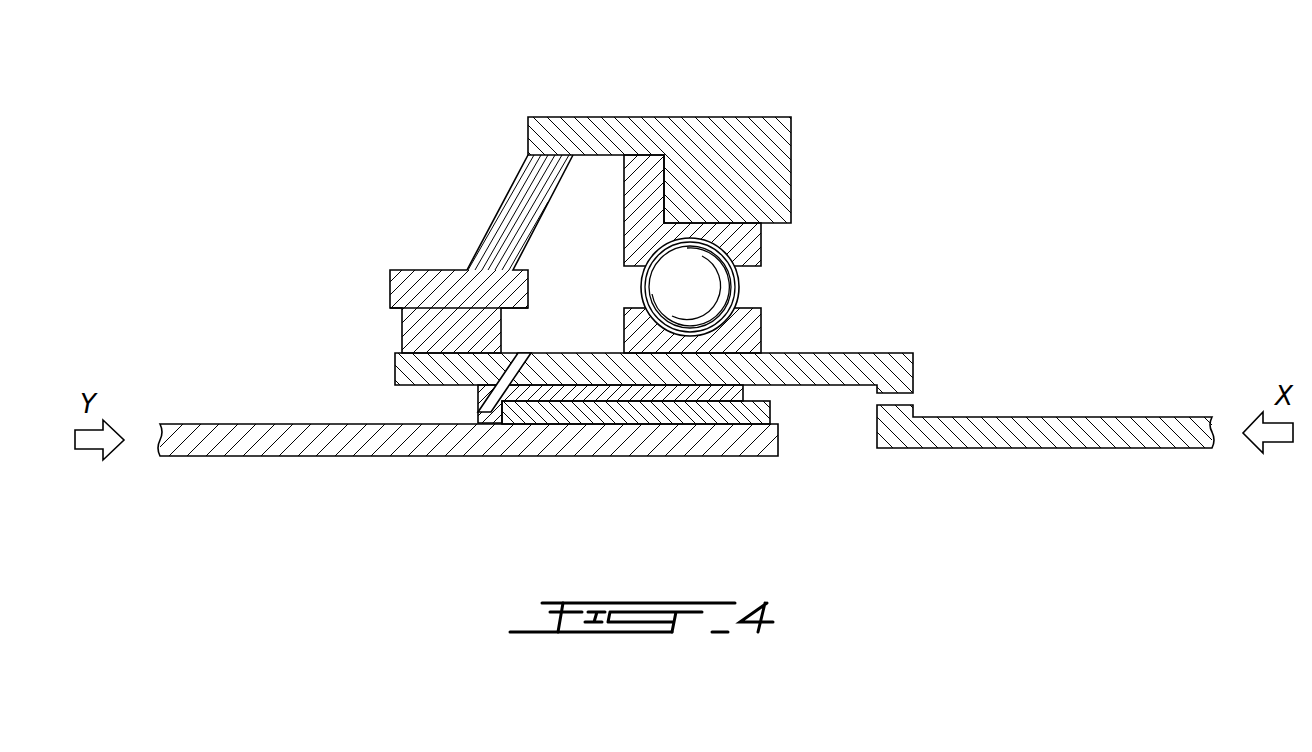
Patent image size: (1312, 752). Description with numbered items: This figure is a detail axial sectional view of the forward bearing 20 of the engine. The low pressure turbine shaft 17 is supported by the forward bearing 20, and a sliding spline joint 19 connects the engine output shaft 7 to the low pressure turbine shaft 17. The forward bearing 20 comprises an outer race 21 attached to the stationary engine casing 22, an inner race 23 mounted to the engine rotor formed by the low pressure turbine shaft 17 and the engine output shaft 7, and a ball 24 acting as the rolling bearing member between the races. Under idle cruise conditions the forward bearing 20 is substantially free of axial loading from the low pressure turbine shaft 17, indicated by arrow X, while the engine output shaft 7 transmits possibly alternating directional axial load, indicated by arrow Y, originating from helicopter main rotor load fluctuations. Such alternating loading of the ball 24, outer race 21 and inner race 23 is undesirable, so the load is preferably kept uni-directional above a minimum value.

The engine output shaft 7 is at (385, 438).
The low pressure turbine shaft 17 is at (960, 433).
The sliding spline joint 19 is at (655, 415).
The forward bearing 20 is at (590, 254).
The outer race 21 is at (744, 247).
The engine casing 22 is at (638, 138).
The inner race 23 is at (745, 335).
The ball 24 is at (695, 288).